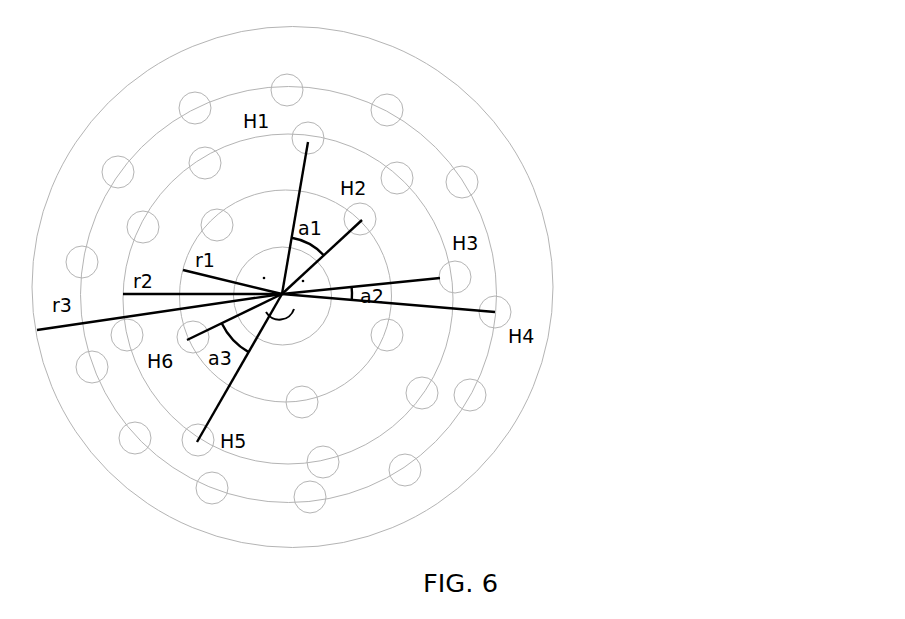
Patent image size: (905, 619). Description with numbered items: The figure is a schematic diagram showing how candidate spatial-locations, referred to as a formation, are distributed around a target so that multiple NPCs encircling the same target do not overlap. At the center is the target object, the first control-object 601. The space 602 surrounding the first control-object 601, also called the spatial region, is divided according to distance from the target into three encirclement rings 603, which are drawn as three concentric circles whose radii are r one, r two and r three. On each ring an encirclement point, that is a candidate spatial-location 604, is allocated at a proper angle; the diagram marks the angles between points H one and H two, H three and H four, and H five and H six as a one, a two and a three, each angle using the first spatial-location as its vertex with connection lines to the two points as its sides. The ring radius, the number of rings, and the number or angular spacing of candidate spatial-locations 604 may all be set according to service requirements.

The first control-object 601 is at (312, 337).
The space 602 is at (378, 70).
The encirclement rings 603 is at (447, 157).
The candidate spatial-location 604 is at (478, 184).